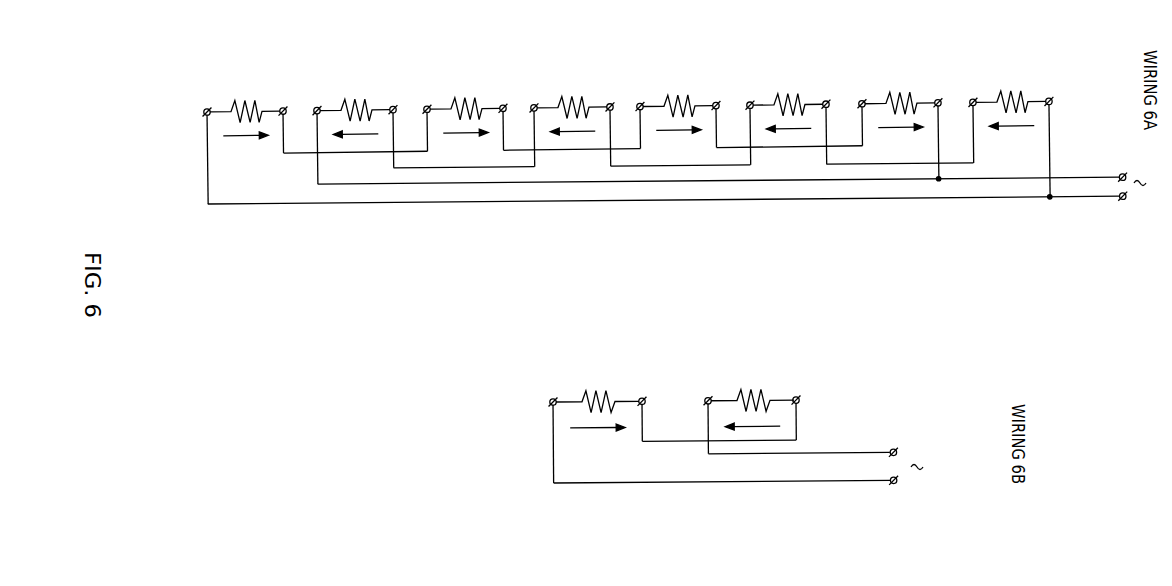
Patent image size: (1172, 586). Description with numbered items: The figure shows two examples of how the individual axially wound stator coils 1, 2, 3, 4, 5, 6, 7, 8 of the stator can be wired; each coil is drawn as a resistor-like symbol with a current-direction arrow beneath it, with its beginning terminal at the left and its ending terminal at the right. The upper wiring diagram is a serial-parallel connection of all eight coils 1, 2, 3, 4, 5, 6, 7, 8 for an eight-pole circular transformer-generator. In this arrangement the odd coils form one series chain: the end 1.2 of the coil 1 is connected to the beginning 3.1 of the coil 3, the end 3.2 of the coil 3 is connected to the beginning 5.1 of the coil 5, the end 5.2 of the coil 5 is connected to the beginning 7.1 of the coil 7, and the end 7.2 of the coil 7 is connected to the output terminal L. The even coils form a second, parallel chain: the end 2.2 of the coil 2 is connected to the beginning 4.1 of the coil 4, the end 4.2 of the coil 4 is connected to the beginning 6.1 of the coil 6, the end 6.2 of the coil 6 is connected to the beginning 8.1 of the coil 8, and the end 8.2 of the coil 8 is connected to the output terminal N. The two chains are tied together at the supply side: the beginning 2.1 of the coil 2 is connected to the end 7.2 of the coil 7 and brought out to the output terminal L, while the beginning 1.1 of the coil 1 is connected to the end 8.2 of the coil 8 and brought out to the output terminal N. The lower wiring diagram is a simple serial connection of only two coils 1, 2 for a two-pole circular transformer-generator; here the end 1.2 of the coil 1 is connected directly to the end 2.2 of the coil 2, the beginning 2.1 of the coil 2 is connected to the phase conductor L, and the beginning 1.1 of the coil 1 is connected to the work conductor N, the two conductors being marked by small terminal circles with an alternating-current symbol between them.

The individual axially wound stator coil 1 is at (424, 235).
The individual axially wound stator coil 2 is at (558, 234).
The individual axially wound stator coil 3 is at (466, 87).
The individual axially wound stator coil 4 is at (571, 86).
The individual axially wound stator coil 5 is at (679, 84).
The individual axially wound stator coil 6 is at (788, 83).
The individual axially wound stator coil 7 is at (900, 82).
The individual axially wound stator coil 8 is at (1011, 80).
The beginning of stator coil 1 1.1 is at (378, 244).
The ending of stator coil 1 1.2 is at (462, 243).
The beginning of stator coil 2 2.1 is at (513, 243).
The ending of stator coil 2 2.2 is at (596, 242).
The beginning of stator coil 3 3.1 is at (429, 97).
The ending of stator coil 3 3.2 is at (502, 96).
The beginning of stator coil 4 4.1 is at (534, 95).
The ending of stator coil 4 4.2 is at (607, 94).
The beginning of stator coil 5 5.1 is at (641, 94).
The ending of stator coil 5 5.2 is at (715, 93).
The beginning of stator coil 6 6.1 is at (750, 93).
The ending of stator coil 6 6.2 is at (825, 92).
The beginning of stator coil 7 7.1 is at (862, 91).
The ending of stator coil 7 7.2 is at (936, 90).
The beginning of stator coil 8 8.1 is at (973, 90).
The ending of stator coil 8 8.2 is at (1048, 89).
The output terminal L (phase conductor) L is at (727, 306).
The output terminal N (work conductor) N is at (674, 342).